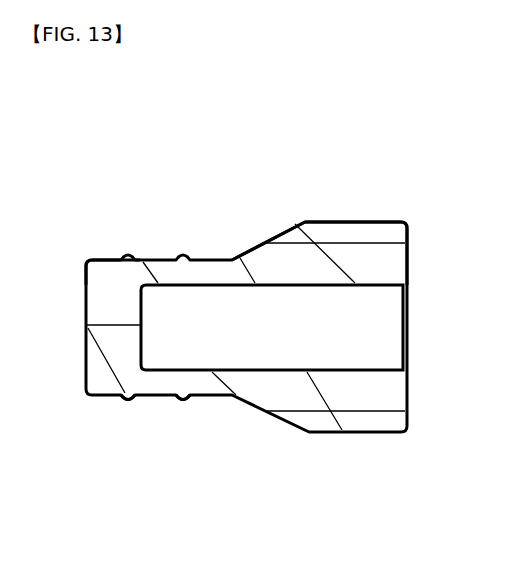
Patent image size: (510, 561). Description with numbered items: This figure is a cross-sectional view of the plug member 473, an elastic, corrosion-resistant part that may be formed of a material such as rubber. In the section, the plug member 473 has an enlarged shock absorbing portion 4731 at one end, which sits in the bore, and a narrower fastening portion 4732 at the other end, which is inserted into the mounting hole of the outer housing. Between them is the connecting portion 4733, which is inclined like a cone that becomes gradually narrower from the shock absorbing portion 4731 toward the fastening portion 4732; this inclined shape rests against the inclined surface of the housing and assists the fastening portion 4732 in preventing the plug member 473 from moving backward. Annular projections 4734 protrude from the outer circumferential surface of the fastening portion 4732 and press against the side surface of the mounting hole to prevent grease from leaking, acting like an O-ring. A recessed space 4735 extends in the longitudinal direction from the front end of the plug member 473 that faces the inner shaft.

The plug member 473 is at (200, 206).
The shock absorbing portion 4731 is at (357, 221).
The fastening portion 4732 is at (106, 258).
The connecting portion 4733 is at (262, 237).
The annular projection 4734 is at (128, 401).
The recessed space 4735 is at (333, 330).